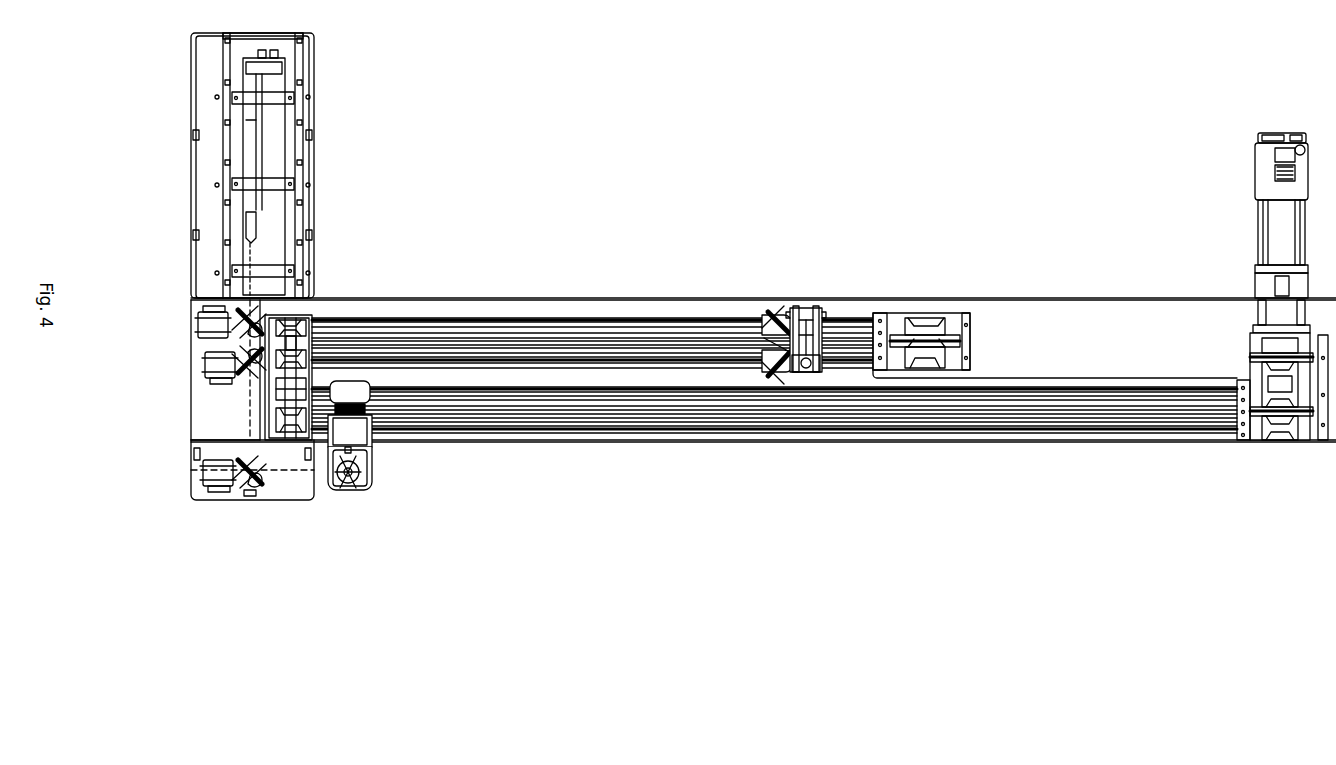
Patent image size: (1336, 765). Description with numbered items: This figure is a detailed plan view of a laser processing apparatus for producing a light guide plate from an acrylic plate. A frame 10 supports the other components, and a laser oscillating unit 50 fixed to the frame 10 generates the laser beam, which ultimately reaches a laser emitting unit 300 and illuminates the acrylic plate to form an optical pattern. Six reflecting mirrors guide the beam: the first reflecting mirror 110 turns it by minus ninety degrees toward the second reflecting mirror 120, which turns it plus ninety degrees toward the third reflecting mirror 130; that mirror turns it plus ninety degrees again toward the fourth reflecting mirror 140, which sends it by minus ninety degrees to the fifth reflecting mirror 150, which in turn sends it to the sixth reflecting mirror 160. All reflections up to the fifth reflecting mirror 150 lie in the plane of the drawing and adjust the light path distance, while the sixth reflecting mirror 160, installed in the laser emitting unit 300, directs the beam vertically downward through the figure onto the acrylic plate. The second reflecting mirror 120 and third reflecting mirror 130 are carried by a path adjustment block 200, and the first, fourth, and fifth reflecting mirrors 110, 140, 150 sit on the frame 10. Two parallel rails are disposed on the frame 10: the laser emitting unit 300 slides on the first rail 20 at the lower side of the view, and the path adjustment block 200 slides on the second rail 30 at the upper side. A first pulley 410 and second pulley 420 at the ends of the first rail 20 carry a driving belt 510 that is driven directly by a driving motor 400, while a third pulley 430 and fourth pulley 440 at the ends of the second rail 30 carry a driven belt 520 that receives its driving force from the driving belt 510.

The frame 10 is at (1105, 315).
The first rail 20 is at (1075, 390).
The second rail 30 is at (600, 367).
The laser oscillating unit 50 is at (256, 222).
The first reflecting mirror 110 is at (250, 300).
The second reflecting mirror 120 is at (790, 315).
The third reflecting mirror 130 is at (783, 378).
The fourth reflecting mirror 140 is at (262, 358).
The fifth reflecting mirror 150 is at (238, 497).
The sixth reflecting mirror 160 is at (352, 492).
The path adjustment block 200 is at (815, 315).
The laser emitting unit 300 is at (372, 440).
The driving motor 400 is at (1275, 210).
The first pulley 410 is at (1297, 430).
The second pulley 420 is at (280, 445).
The third pulley 430 is at (305, 315).
The fourth pulley 440 is at (930, 333).
The driving belt 510 is at (607, 412).
The driven belt 520 is at (522, 345).